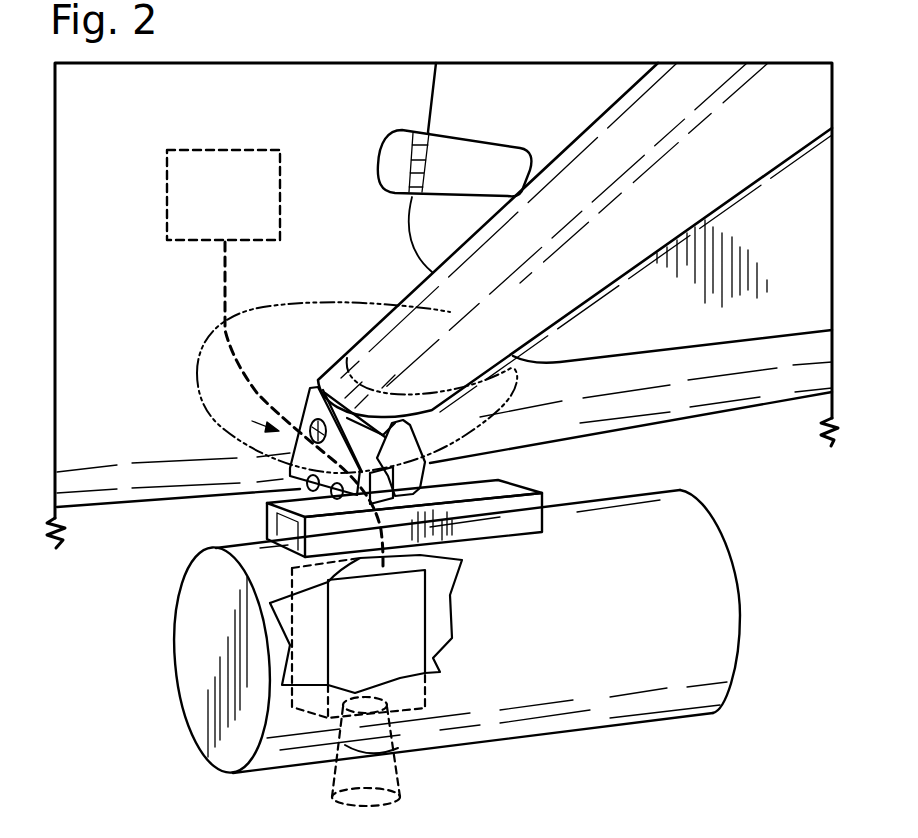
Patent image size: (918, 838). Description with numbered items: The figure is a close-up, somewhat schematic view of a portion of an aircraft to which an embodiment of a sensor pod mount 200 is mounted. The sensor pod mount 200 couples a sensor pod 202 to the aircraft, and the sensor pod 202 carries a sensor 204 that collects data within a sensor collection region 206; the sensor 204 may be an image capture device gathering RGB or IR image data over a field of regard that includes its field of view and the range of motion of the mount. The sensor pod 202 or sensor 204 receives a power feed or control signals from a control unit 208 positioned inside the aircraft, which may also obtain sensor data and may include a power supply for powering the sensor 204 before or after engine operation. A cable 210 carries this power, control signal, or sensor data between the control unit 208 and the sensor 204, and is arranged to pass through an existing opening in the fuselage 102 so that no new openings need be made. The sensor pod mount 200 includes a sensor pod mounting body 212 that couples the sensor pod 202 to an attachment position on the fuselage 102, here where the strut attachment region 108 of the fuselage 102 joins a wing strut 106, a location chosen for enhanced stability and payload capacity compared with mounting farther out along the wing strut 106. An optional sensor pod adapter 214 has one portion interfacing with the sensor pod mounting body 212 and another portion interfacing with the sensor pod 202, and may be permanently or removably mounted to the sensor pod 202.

The fuselage 102 is at (142, 364).
The wing strut 106 is at (684, 214).
The strut attachment region 108 is at (246, 450).
The sensor pod mount 200 is at (540, 380).
The sensor pod 202 is at (689, 624).
The sensor 204 is at (399, 627).
The sensor collection region 206 is at (400, 785).
The control unit 208 is at (208, 150).
The cable 210 is at (230, 290).
The sensor pod mounting body 212 is at (262, 382).
The sensor pod adapter 214 is at (520, 526).